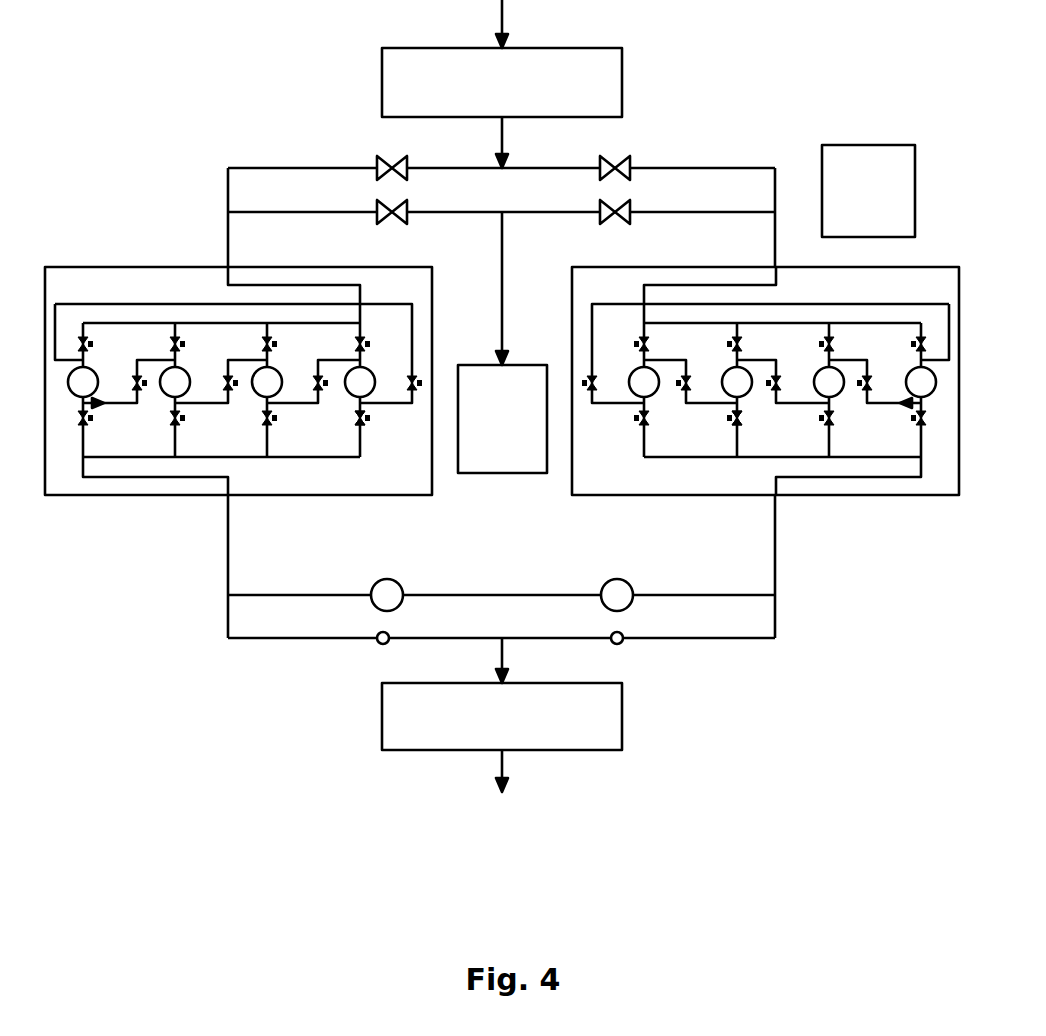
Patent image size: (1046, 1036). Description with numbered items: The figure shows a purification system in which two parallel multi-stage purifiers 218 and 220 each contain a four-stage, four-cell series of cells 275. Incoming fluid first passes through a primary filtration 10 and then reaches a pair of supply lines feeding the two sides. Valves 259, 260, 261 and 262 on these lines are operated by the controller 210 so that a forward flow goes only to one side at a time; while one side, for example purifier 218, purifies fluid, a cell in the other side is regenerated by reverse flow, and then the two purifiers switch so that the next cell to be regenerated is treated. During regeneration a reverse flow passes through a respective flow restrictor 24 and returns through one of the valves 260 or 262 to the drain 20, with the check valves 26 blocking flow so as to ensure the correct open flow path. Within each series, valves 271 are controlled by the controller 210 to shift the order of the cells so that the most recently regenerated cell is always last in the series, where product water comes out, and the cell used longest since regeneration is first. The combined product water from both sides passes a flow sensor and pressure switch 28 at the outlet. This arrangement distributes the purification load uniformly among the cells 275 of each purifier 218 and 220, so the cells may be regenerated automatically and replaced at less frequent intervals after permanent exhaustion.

The primary filtration 10 is at (502, 84).
The drain 20 is at (502, 342).
The flow restrictor 24 is at (502, 571).
The check valve 26 is at (498, 672).
The flow sensor and pressure switch 28 is at (502, 715).
The controller 210 is at (868, 191).
The multi-stage purifier 218 is at (238, 381).
The multi-stage purifier 220 is at (765, 381).
The valve 259 is at (360, 138).
The valve 260 is at (318, 166).
The valve 261 is at (649, 135).
The valve 262 is at (687, 166).
The valve 271 is at (513, 480).
The cell 275 is at (502, 418).